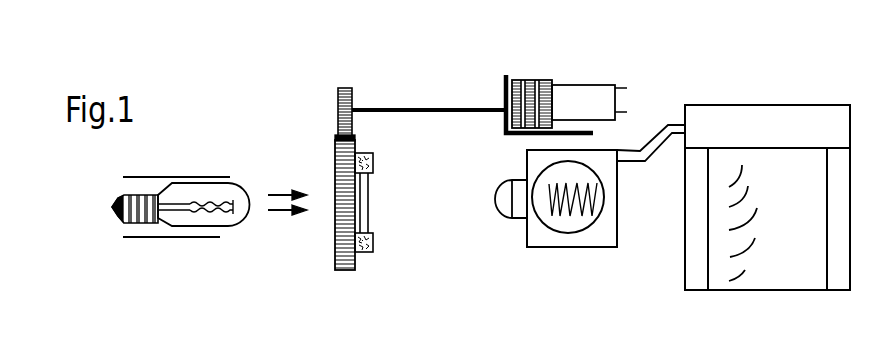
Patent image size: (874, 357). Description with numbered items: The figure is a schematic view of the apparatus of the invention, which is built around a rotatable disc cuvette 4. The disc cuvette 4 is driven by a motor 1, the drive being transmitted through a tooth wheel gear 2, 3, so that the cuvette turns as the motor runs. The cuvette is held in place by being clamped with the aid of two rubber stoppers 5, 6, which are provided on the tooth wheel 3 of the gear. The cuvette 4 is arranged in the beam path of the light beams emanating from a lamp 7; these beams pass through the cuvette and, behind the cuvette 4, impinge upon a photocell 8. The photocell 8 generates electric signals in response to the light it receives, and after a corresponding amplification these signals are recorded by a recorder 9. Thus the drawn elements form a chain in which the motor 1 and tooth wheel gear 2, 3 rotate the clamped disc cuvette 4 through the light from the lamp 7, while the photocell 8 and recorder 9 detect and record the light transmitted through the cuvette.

The motor 1 is at (565, 87).
The tooth wheel gear 2 is at (338, 107).
The tooth wheel 3 is at (336, 180).
The disc cuvette 4 is at (369, 217).
The rubber stopper 5 is at (364, 155).
The rubber stopper 6 is at (371, 251).
The lamp 7 is at (226, 229).
The photocell 8 is at (572, 248).
The recorder 9 is at (758, 112).